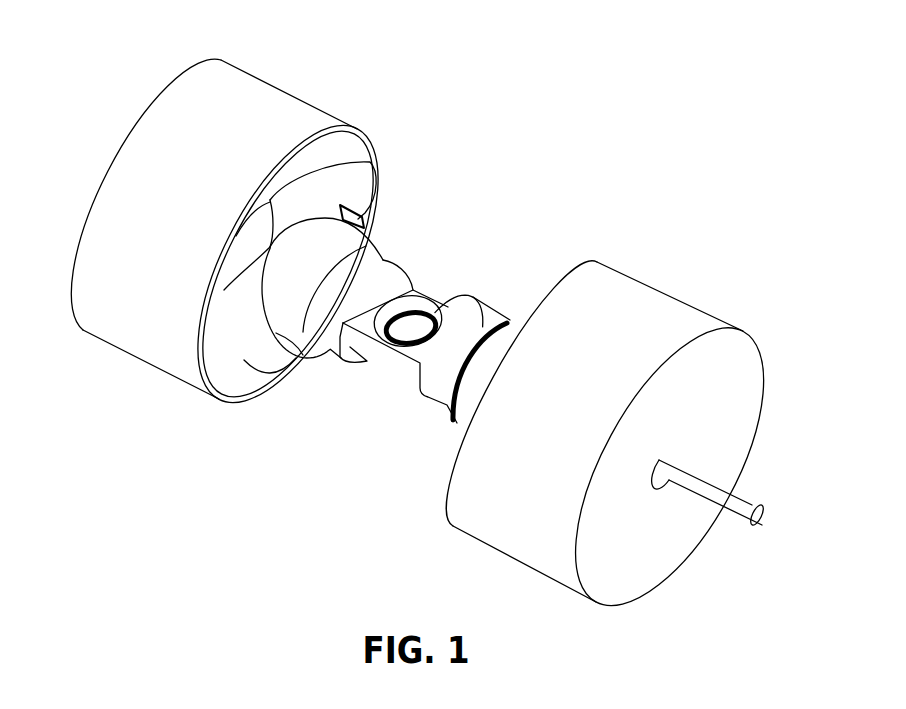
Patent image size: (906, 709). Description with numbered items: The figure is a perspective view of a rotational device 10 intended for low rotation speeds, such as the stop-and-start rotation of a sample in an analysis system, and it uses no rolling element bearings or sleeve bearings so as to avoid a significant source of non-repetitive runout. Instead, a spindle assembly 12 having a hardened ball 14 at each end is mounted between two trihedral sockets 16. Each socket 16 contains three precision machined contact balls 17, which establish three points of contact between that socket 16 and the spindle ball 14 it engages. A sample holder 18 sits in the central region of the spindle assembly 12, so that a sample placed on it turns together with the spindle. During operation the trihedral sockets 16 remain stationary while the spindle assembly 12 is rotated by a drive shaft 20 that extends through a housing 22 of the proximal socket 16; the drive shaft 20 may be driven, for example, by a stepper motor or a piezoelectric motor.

The rotational device 10 is at (508, 69).
The spindle assembly 12 is at (390, 278).
The hardened ball 14 is at (323, 238).
The trihedral socket 16 is at (167, 92).
The contact ball 17 is at (333, 192).
The sample holder 18 is at (397, 337).
The drive shaft 20 is at (730, 503).
The housing 22 is at (197, 208).